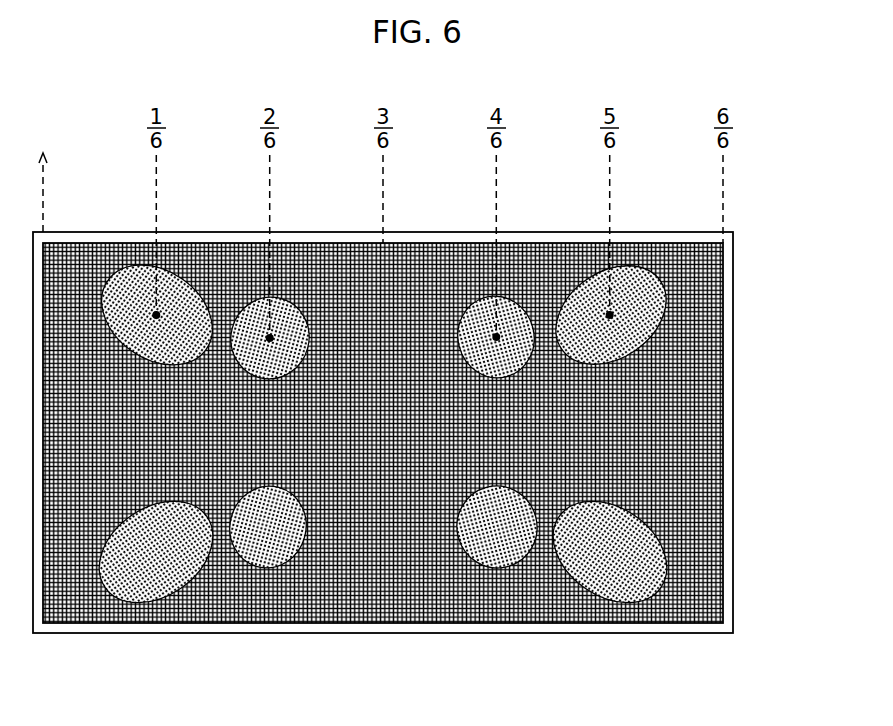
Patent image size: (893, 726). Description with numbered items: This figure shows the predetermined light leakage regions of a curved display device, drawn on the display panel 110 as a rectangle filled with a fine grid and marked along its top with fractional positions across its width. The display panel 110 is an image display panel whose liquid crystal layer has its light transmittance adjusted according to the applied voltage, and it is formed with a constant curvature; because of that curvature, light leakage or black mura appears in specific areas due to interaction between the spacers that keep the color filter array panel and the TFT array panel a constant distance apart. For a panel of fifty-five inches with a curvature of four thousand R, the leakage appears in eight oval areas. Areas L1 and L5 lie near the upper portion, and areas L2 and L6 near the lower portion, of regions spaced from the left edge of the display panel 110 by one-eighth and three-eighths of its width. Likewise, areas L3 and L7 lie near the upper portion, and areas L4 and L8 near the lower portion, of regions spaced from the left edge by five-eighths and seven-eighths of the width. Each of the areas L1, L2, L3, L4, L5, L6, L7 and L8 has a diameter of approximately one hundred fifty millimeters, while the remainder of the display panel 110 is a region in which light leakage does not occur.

The display panel 110 is at (725, 375).
The light leakage area L1 is at (128, 297).
The light leakage area L2 is at (130, 568).
The light leakage area L3 is at (639, 278).
The light leakage area L4 is at (625, 560).
The light leakage area L5 is at (290, 312).
The light leakage area L6 is at (288, 545).
The light leakage area L7 is at (475, 313).
The light leakage area L8 is at (480, 540).